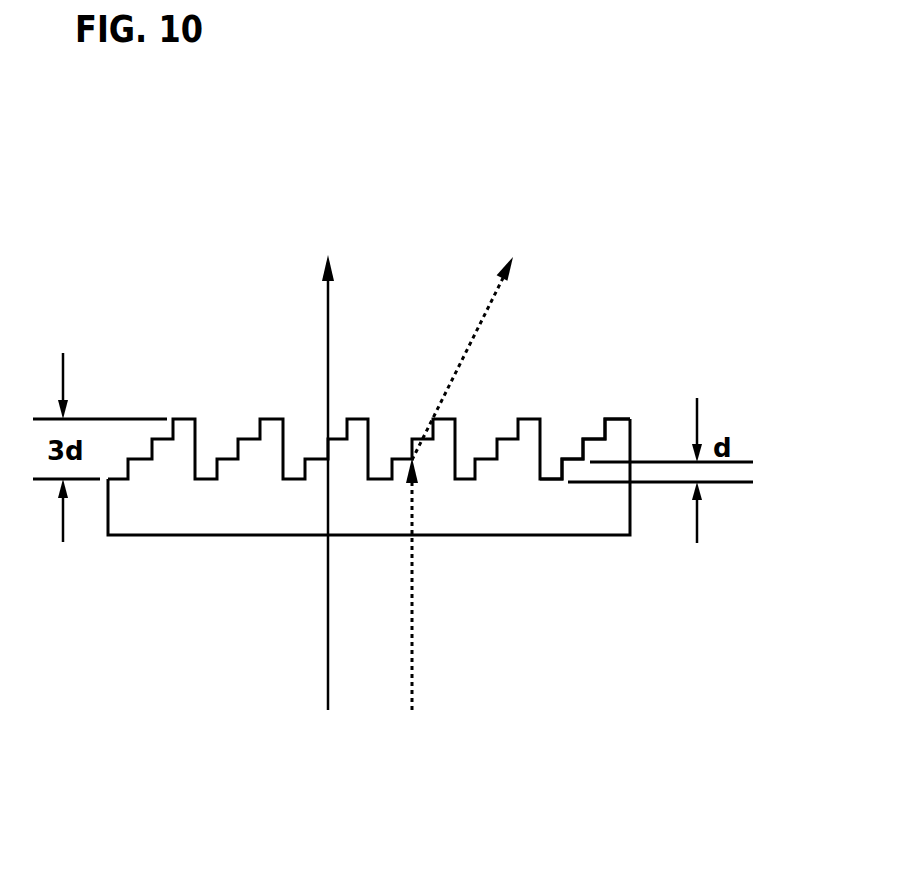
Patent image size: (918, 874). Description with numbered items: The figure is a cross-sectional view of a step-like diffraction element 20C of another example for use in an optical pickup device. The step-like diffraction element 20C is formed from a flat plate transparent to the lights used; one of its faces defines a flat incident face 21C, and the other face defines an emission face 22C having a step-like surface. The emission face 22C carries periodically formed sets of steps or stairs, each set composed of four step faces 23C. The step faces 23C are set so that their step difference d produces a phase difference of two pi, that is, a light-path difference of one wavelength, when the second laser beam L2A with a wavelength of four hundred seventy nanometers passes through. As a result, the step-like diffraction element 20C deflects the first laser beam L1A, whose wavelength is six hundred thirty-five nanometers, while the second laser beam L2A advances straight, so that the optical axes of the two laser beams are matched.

The step-like diffraction element 20C is at (633, 218).
The flat incident face 21C is at (513, 535).
The emission face 22C is at (528, 418).
The step face 23C is at (552, 479).
The first laser beam L1A is at (462, 327).
The second laser beam L2A is at (316, 307).